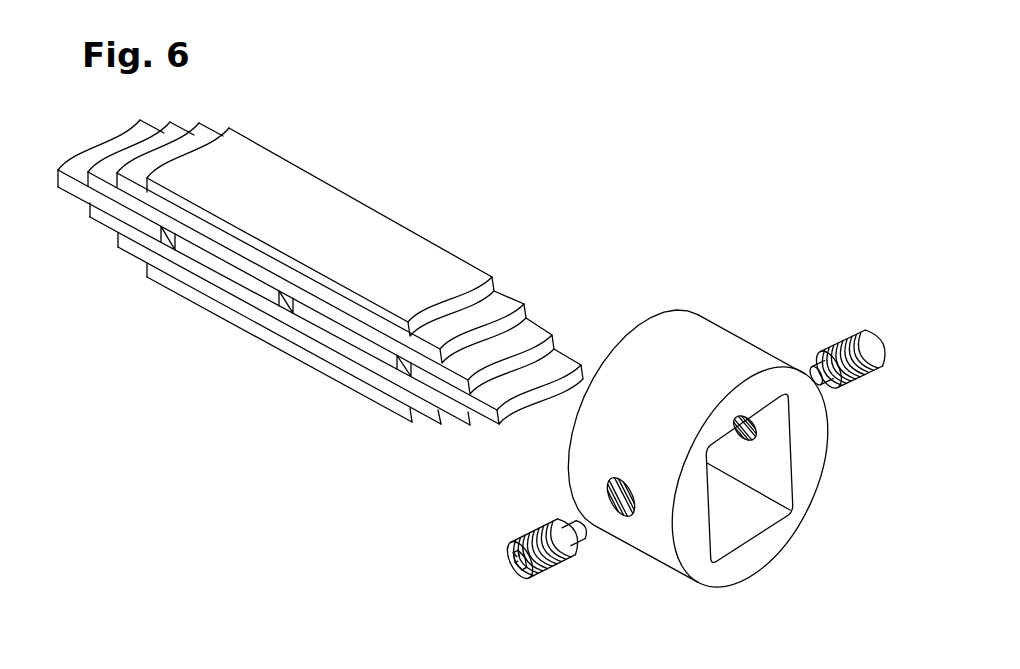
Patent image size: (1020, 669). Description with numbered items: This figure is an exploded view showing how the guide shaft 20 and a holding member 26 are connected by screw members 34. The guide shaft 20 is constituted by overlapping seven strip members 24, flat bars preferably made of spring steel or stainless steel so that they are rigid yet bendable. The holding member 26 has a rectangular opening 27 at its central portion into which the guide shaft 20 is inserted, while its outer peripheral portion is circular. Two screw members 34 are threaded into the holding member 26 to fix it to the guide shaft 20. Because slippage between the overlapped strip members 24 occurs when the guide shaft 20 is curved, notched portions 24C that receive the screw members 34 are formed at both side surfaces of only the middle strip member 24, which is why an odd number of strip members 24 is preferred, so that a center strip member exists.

The guide shaft 20 is at (386, 186).
The strip member 24 is at (437, 258).
The spacer 24C is at (161, 242).
The holding member 26 is at (703, 342).
The rectangular opening 27 is at (745, 524).
The screw member 34 is at (847, 323).